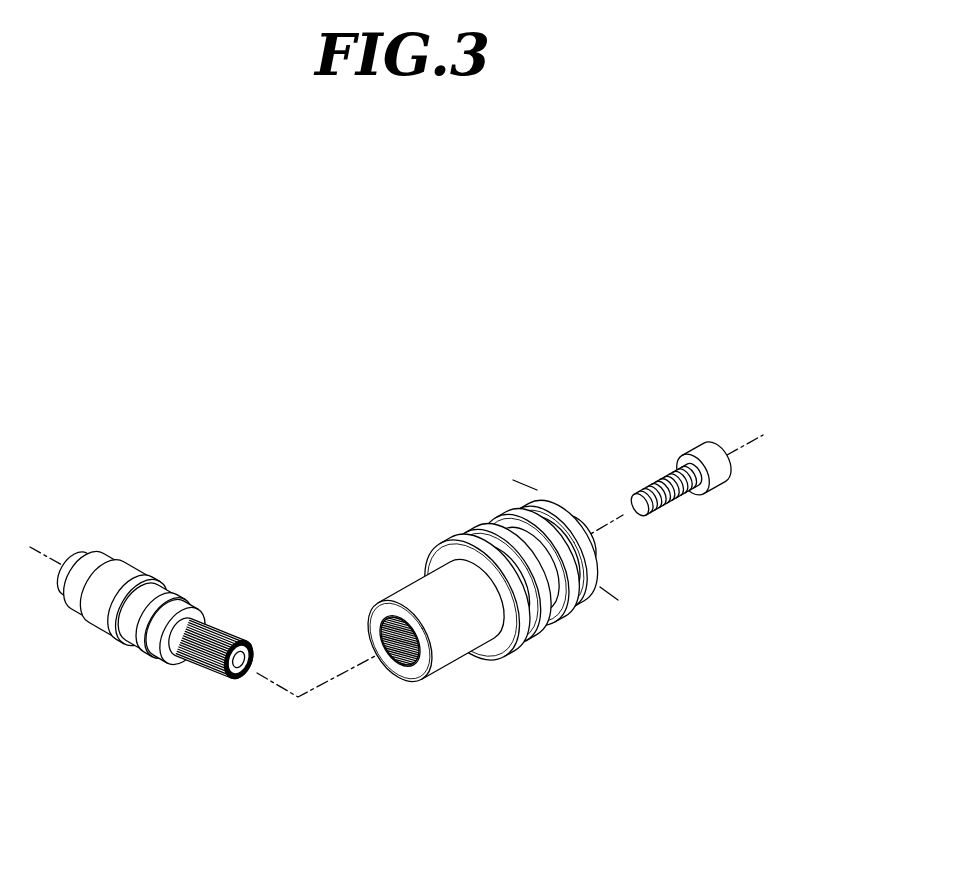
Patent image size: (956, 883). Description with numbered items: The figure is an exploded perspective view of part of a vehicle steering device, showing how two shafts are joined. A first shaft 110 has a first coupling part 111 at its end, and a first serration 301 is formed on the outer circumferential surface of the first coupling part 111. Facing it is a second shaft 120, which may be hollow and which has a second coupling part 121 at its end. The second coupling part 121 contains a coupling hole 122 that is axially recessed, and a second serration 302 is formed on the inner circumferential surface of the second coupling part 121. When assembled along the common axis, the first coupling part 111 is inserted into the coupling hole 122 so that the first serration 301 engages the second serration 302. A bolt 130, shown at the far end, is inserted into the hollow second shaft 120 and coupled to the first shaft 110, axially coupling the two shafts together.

The first shaft 110 is at (130, 588).
The first coupling part 111 is at (210, 688).
The first serration 301 is at (210, 610).
The second serration 302 is at (375, 593).
The second shaft 120 is at (513, 564).
The second coupling part 121 is at (436, 634).
The coupling hole 122 is at (399, 655).
The bolt 130 is at (680, 454).